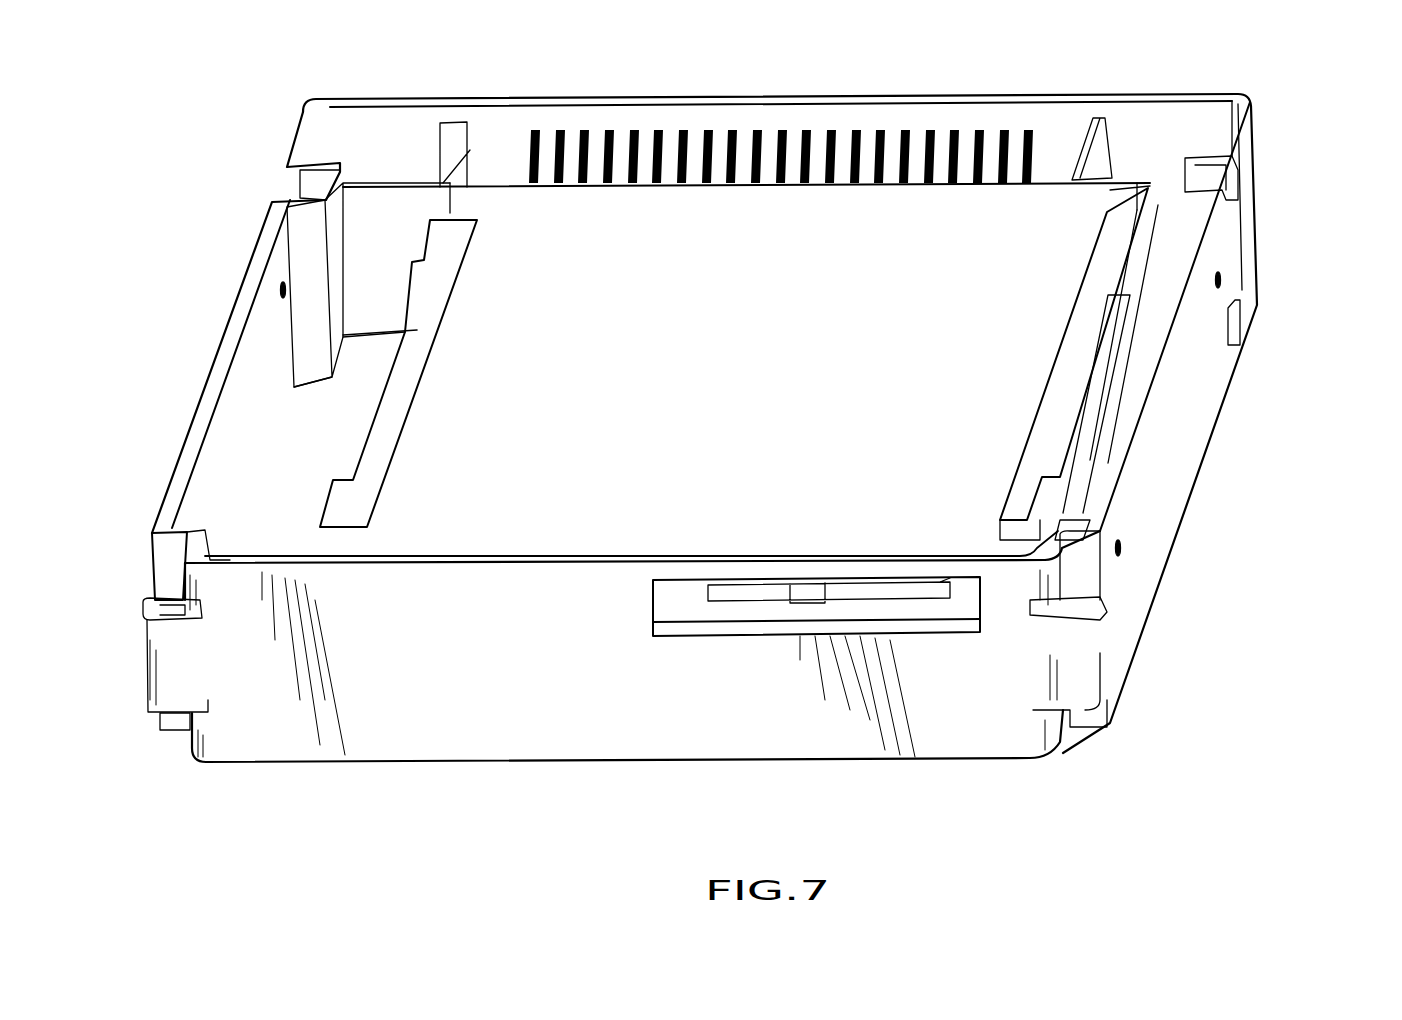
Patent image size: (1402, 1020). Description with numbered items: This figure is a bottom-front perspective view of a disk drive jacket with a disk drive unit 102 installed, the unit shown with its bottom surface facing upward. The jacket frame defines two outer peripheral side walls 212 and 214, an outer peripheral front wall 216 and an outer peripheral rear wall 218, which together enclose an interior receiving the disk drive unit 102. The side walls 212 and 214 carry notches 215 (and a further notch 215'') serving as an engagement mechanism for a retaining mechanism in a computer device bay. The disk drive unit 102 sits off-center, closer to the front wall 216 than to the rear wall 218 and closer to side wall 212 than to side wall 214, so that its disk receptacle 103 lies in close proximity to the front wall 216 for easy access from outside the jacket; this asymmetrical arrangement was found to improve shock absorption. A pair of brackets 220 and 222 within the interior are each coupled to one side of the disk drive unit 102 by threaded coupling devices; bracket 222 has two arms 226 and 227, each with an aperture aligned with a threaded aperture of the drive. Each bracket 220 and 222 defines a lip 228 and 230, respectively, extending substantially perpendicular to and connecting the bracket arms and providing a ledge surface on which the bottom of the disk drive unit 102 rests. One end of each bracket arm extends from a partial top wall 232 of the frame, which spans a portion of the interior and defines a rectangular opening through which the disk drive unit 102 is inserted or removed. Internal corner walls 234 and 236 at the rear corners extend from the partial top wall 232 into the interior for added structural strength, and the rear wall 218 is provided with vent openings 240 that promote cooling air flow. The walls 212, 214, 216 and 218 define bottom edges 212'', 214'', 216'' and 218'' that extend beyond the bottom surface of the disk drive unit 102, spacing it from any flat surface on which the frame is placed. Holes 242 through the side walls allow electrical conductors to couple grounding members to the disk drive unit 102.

The disk drive unit 102 is at (650, 384).
The disk receptacle 103 is at (854, 614).
The outer peripheral side wall 212 is at (1145, 577).
The bottom edge of side wall 212'' is at (1214, 427).
The outer peripheral side wall 214 is at (294, 364).
The bottom edge of side wall 214'' is at (225, 322).
The notch 215 is at (271, 165).
The notch 215'' is at (1252, 175).
The outer peripheral front wall 216 is at (628, 674).
The bottom edge of front wall 216'' is at (398, 607).
The outer peripheral rear wall 218 is at (777, 64).
The bottom edge of rear wall 218'' is at (1047, 87).
The bracket 220 is at (366, 402).
The bracket 222 is at (1078, 393).
The bracket arm 226 is at (1055, 512).
The bracket arm 227 is at (1232, 332).
The lip 228 is at (380, 445).
The lip 230 is at (1036, 472).
The partial top wall 232 is at (326, 472).
The internal corner wall 234 is at (390, 166).
The internal corner wall 236 is at (1106, 164).
The vent openings 240 is at (656, 152).
The holes 242 is at (1222, 282).